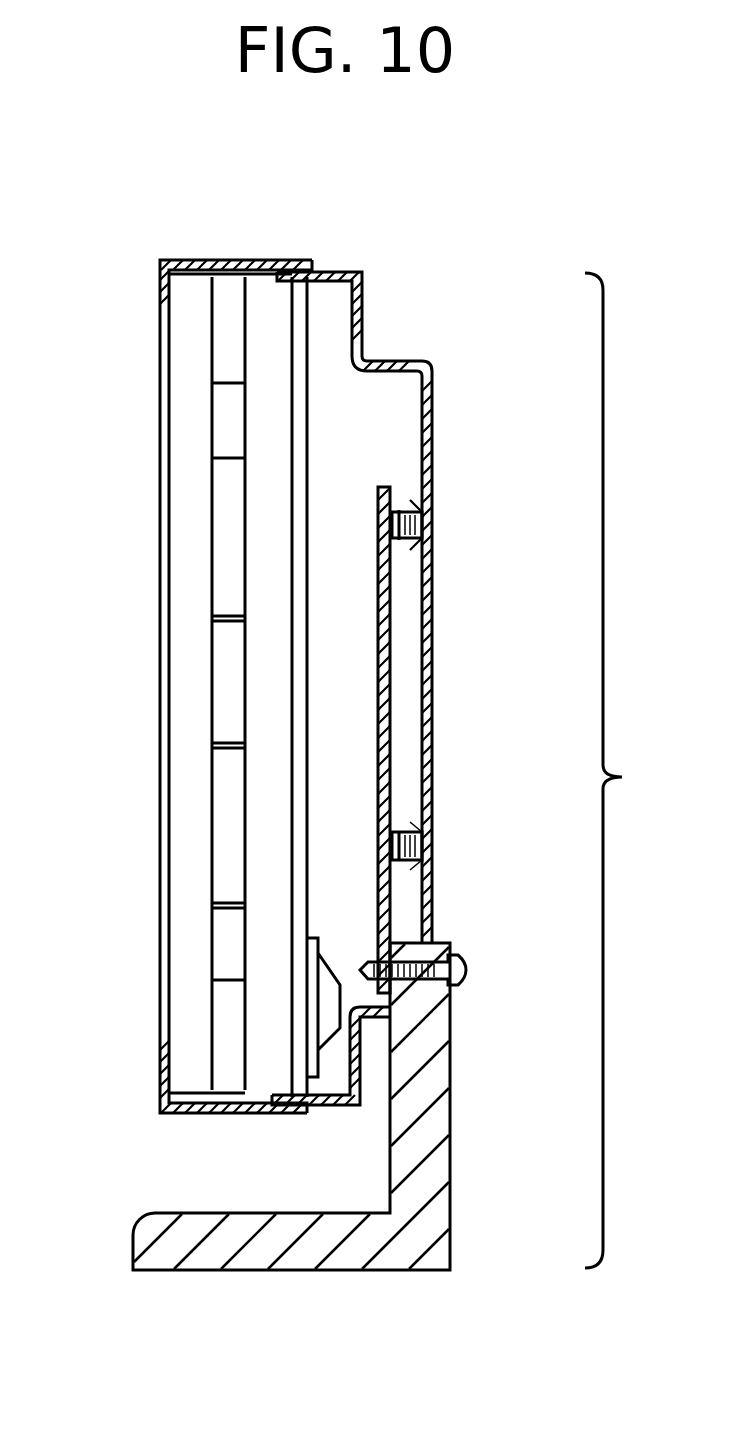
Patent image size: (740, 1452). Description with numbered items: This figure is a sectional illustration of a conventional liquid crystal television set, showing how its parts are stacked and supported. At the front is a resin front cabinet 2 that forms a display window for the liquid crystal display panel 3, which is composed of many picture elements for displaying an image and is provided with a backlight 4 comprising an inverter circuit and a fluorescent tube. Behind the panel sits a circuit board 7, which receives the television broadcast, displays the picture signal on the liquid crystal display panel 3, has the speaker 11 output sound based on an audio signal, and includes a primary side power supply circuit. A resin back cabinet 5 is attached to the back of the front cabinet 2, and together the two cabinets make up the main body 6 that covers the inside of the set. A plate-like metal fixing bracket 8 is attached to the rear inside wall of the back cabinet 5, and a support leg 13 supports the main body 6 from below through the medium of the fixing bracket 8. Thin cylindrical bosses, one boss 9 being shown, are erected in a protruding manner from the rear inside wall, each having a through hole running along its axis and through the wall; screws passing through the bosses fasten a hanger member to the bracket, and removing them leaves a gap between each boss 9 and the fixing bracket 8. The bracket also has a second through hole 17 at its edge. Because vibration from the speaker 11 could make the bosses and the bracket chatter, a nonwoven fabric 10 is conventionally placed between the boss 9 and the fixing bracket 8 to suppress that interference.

The front cabinet 2 is at (185, 258).
The liquid crystal display panel 3 is at (168, 380).
The backlight 4 is at (215, 948).
The back cabinet 5 is at (347, 267).
The main body 6 is at (627, 770).
The circuit board 7 is at (307, 330).
The fixing bracket 8 is at (387, 487).
The boss 9 is at (410, 500).
The nonwoven fabric 10 is at (393, 523).
The speaker 11 is at (320, 953).
The support leg 13 is at (430, 1133).
The second through hole 17 is at (415, 527).